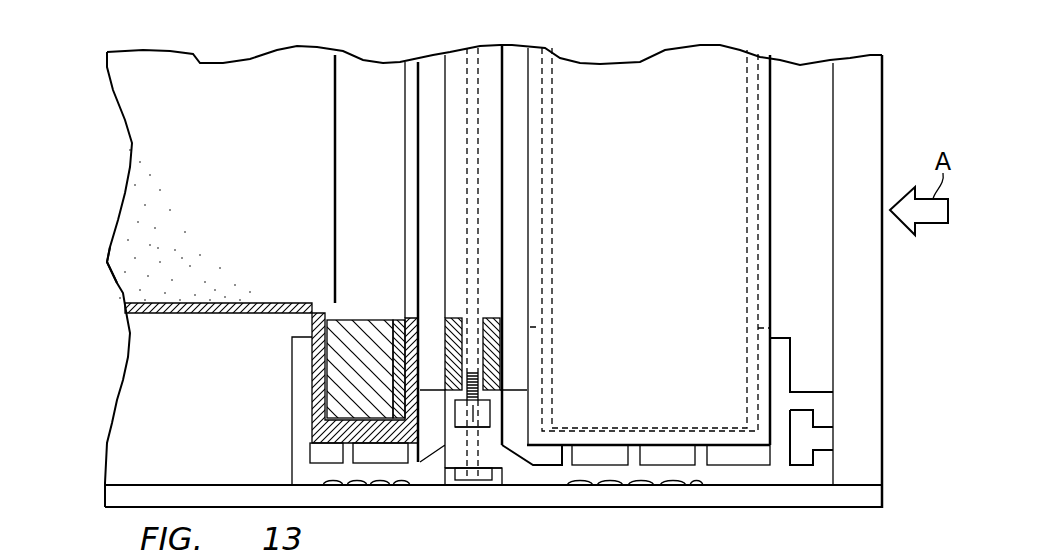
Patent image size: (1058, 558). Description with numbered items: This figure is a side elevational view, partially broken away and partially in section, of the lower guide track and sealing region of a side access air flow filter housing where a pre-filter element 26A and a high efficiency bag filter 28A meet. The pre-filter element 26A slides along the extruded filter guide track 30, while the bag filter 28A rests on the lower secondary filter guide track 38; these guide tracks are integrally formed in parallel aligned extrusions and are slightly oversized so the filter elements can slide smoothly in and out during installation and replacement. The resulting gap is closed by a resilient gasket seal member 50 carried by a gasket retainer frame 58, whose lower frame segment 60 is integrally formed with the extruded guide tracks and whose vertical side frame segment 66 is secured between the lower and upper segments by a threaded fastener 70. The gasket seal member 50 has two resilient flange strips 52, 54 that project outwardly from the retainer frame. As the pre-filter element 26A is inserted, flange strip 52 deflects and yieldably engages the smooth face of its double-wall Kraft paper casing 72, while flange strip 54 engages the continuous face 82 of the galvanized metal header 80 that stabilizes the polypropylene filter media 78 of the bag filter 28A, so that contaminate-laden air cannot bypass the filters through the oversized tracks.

The polypropylene filter media 78 is at (207, 65).
The bag filter 28A is at (110, 265).
The pre-filter element 26A is at (774, 80).
The filter guide track 30 is at (790, 352).
The lower secondary filter guide track 38 is at (292, 368).
The gasket seal member 50 is at (529, 110).
The resilient flange strip 52 is at (523, 147).
The resilient flange strip 54 is at (430, 205).
The gasket retainer frame 58 is at (457, 445).
The lower frame segment 60 is at (503, 428).
The vertical side frame segment 66 is at (445, 98).
The threaded fastener 70 is at (473, 415).
The casing 72 is at (537, 358).
The metal header 80 is at (320, 390).
The continuous face 82 is at (415, 323).